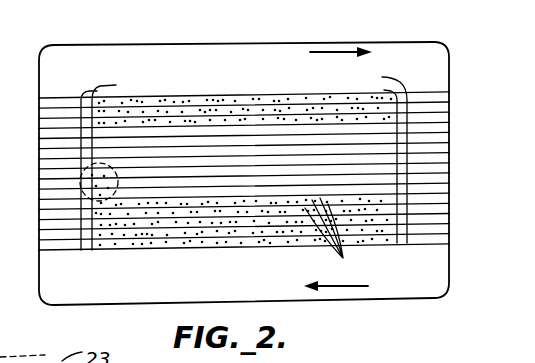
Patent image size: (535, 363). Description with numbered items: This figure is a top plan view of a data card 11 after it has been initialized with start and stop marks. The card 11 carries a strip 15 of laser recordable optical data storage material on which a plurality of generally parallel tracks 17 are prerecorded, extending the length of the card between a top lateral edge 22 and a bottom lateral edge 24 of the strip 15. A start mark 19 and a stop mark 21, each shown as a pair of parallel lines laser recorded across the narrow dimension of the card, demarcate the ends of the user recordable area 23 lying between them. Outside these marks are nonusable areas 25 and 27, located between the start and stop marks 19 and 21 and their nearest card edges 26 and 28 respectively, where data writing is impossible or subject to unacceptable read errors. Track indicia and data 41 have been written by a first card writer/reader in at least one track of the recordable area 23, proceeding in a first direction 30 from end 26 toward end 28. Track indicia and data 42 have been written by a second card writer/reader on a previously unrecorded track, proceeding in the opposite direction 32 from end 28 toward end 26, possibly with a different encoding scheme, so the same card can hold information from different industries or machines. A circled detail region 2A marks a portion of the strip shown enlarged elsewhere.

The data card 11 is at (105, 33).
The enlarged detail region 2A is at (114, 197).
The strip 15 is at (178, 233).
The tracks 17 is at (339, 237).
The start mark 19 is at (112, 161).
The stop mark 21 is at (382, 153).
The top lateral edge 22 is at (166, 96).
The user recordable area 23 is at (324, 148).
The bottom lateral edge 24 is at (106, 250).
The nonusable area 25 is at (58, 92).
The card edge 26 is at (35, 285).
The nonusable area 27 is at (433, 84).
The card edge 28 is at (448, 263).
The first direction 30 is at (325, 50).
The opposite direction 32 is at (347, 288).
The track indicia and data 41 is at (248, 105).
The track indicia and data 42 is at (246, 210).